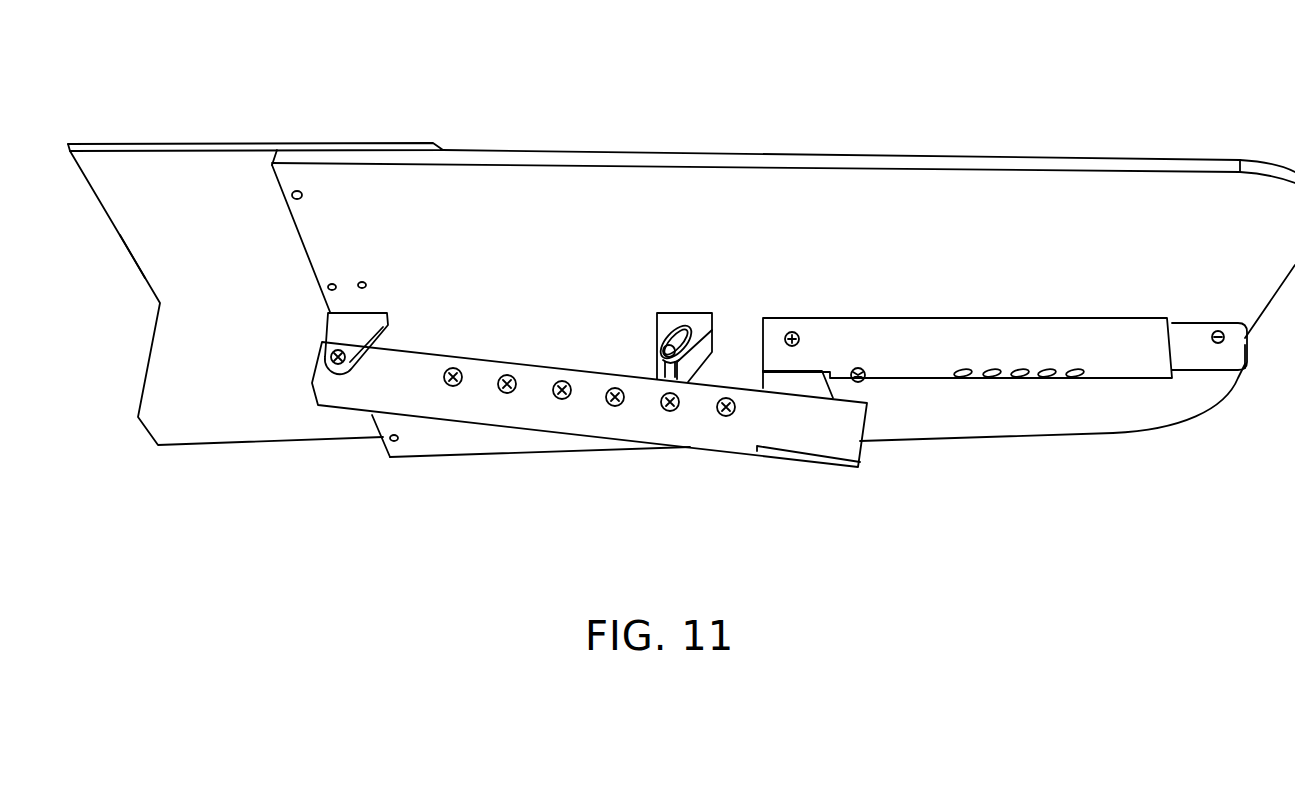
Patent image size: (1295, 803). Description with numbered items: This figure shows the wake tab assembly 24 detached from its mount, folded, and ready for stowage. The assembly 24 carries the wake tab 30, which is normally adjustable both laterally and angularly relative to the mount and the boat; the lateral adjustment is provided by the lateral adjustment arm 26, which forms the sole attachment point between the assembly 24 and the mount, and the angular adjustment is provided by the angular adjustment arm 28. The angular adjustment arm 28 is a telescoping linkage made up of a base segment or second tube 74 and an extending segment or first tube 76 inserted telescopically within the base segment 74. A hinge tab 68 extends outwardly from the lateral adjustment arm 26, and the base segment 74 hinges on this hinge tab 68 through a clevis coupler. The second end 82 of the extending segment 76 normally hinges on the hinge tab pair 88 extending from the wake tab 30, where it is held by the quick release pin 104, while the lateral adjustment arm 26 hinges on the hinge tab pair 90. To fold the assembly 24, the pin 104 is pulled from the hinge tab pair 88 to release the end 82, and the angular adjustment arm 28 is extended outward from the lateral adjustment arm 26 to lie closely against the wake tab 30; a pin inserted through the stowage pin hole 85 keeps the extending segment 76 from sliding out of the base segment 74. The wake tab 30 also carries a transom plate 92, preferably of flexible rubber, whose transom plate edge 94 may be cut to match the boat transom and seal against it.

The wake tab assembly 24 is at (770, 46).
The lateral adjustment arm 26 is at (693, 442).
The angular adjustment arm 28 is at (1056, 289).
The wake tab 30 is at (902, 215).
The hinge tab 68 is at (790, 384).
The base segment (second tube) 74 is at (962, 323).
The extending segment (first tube) 76 is at (1202, 323).
The second end of the extending segment 82 is at (1247, 360).
The stowage pin hole 85 is at (867, 375).
The hinge tab pair 88 is at (697, 313).
The hinge tab pair 90 is at (372, 312).
The transom plate 92 is at (224, 268).
The transom plate edge 94 is at (134, 259).
The quick release pin 104 is at (663, 356).